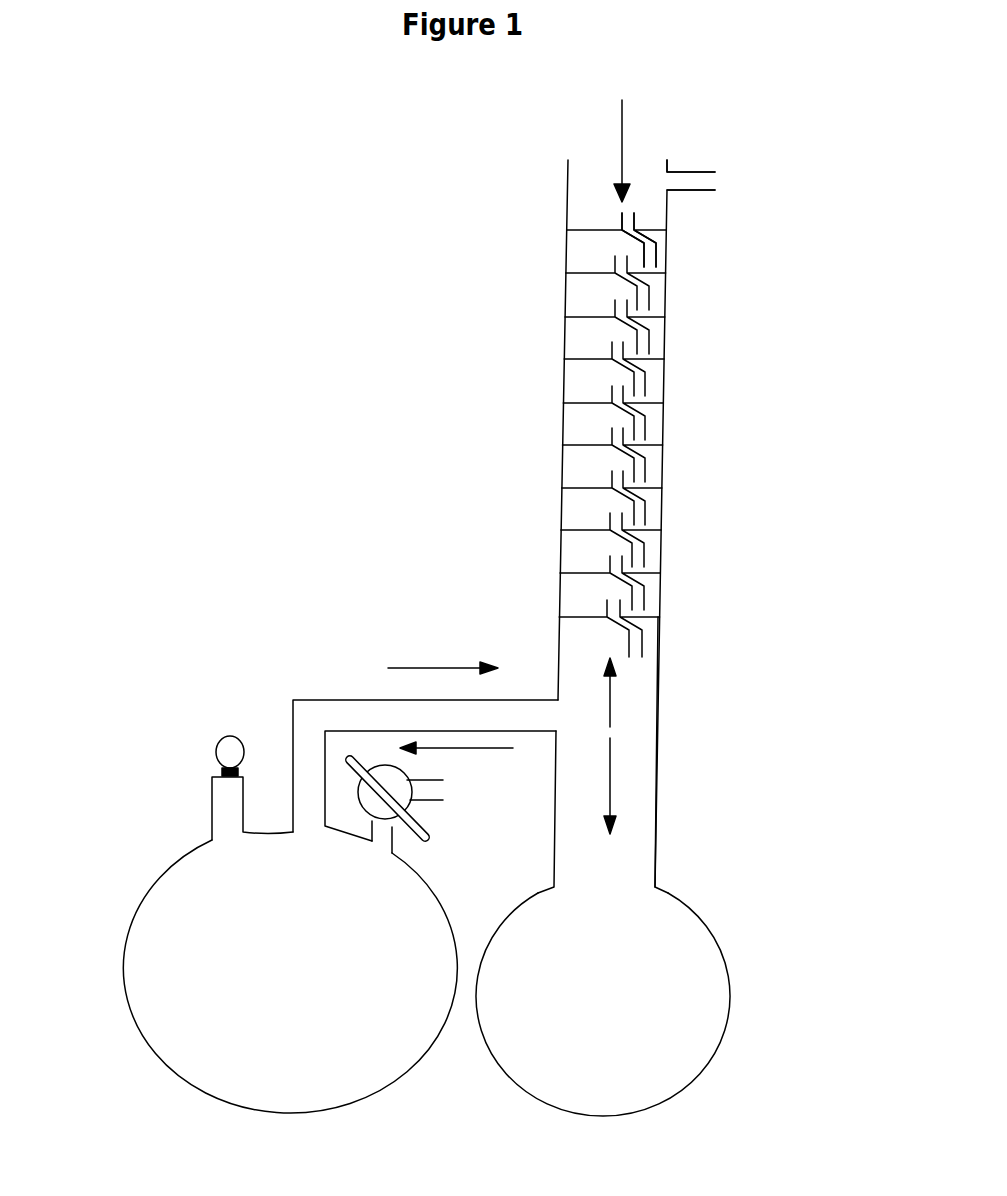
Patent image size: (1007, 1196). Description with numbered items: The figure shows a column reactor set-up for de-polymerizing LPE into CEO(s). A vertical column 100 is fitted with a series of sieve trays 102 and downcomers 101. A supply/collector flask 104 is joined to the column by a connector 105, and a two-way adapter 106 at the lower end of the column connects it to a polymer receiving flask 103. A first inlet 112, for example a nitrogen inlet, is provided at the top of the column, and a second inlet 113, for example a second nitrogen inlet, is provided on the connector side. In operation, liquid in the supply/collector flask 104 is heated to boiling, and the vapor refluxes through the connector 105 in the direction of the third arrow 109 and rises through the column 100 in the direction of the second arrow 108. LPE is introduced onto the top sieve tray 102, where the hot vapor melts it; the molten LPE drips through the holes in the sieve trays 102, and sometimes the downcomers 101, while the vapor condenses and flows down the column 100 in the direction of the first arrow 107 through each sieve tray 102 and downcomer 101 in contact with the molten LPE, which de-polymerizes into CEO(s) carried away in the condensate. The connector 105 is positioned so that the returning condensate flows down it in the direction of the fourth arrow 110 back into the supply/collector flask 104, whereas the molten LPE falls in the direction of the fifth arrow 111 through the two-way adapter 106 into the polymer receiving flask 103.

The column 100 is at (562, 385).
The downcomers 101 is at (659, 248).
The sieve trays 102 is at (635, 317).
The polymer receiving flask 103 is at (655, 1002).
The supply/collector flask 104 is at (233, 925).
The connector 105 is at (308, 707).
The 2-way adapter 106 is at (662, 815).
The first arrow 107 is at (622, 137).
The second arrow 108 is at (626, 692).
The third arrow 109 is at (443, 657).
The fourth arrow 110 is at (456, 759).
The fifth arrow 111 is at (624, 786).
The first inlet 112 is at (718, 183).
The second inlet 113 is at (437, 791).